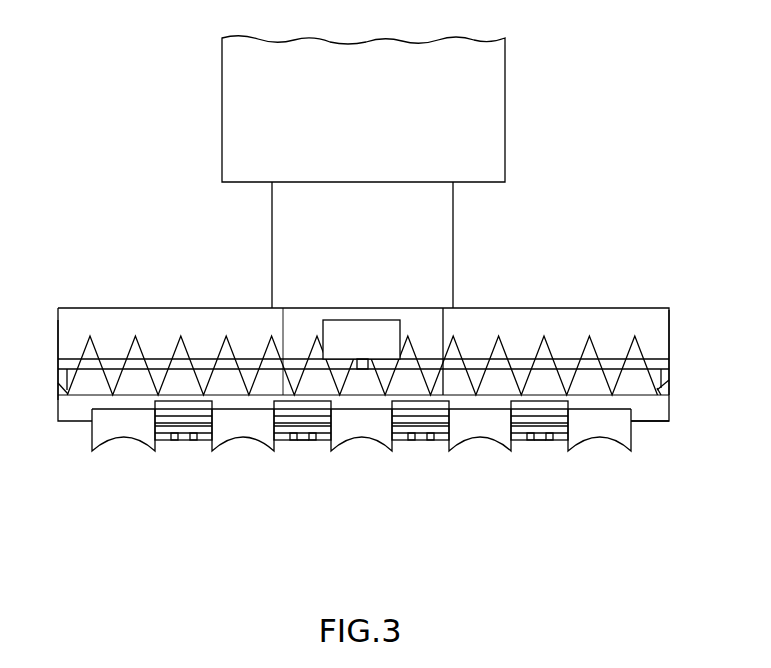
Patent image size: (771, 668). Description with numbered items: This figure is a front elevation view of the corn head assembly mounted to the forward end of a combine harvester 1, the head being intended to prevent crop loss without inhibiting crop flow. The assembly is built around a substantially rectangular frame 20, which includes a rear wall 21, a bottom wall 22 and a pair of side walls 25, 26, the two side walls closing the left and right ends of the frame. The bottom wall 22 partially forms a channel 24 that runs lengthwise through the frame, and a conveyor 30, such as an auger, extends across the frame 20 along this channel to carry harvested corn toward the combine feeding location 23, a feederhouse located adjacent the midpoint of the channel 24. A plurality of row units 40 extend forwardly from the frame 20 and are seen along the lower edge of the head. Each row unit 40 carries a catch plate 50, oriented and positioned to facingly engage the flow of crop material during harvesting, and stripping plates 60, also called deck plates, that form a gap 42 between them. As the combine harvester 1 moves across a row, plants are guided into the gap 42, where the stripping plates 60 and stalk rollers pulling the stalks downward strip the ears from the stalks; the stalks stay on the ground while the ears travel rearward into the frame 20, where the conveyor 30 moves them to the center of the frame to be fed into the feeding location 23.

The combine harvester 1 is at (88, 106).
The frame 20 is at (95, 307).
The rear wall 21 is at (589, 320).
The bottom wall 22 is at (650, 422).
The combine feeding location 23 is at (290, 322).
The channel 24 is at (657, 388).
The side wall 25 is at (58, 341).
The side wall 26 is at (670, 323).
The conveyor 30 is at (160, 368).
The row unit 40 is at (165, 441).
The gap 42 is at (421, 460).
The catch plate 50 is at (302, 441).
The stripping plate 60 is at (194, 441).